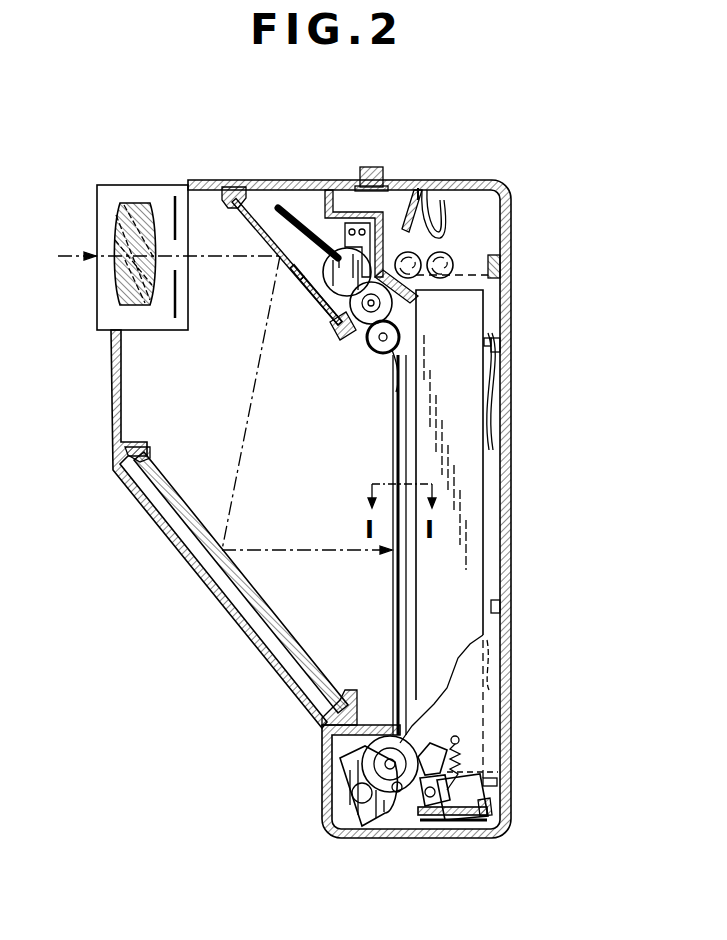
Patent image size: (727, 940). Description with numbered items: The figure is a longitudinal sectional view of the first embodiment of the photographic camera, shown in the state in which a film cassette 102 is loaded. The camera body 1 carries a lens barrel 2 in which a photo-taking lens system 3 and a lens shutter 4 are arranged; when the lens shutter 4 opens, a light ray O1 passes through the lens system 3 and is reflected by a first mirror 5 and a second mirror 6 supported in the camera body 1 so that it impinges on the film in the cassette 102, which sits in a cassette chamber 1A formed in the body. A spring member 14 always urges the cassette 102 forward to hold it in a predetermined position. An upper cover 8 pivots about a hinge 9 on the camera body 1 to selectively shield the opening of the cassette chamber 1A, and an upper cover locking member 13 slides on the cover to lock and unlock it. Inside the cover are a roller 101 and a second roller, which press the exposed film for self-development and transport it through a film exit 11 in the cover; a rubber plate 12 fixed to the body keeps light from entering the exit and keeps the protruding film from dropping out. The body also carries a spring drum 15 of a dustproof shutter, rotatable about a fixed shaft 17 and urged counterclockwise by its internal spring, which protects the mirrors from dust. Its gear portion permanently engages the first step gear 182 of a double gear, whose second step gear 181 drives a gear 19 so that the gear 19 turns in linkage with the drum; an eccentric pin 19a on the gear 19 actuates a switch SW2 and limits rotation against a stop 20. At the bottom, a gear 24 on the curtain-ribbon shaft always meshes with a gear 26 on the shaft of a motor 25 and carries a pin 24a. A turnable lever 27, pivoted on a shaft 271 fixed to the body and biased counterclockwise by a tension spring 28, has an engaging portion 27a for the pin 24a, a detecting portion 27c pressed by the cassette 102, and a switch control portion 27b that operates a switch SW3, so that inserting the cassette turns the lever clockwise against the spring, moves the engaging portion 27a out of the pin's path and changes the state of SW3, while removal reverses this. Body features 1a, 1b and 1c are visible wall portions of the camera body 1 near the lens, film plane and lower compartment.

The camera body 1 is at (122, 386).
The cassette chamber 1A is at (498, 550).
The bracket on housing 1a is at (500, 789).
The film plane / pressure plate 1b is at (394, 606).
The housing corner wall 1c is at (336, 742).
The lens barrel 2 is at (108, 190).
The photo-taking lens system 3 is at (132, 203).
The lens shutter 4 is at (172, 196).
The first mirror 5 is at (248, 203).
The second mirror 6 is at (195, 548).
The upper cover 8 is at (486, 179).
The hinge 9 is at (500, 268).
The roller 101 is at (411, 259).
The film cassette 102 is at (446, 259).
The film exit 11 is at (420, 172).
The rubber plate 12 is at (432, 229).
The upper cover locking member 13 is at (370, 167).
The spring member 14 is at (493, 412).
The spring drum 15 is at (385, 353).
The fixed shaft 17 is at (392, 338).
The second step gear 181 is at (370, 311).
The first step gear 182 is at (390, 302).
The gear 19 is at (320, 297).
The eccentric pin 19a is at (338, 328).
The stop 20 is at (324, 270).
The gear 24 is at (374, 766).
The pin 24a is at (397, 793).
The motor 25 is at (367, 815).
The gear 26 is at (356, 803).
The turnable lever 27 is at (450, 822).
The shaft 271 is at (431, 798).
The engaging portion 27a is at (446, 744).
The switch control portion 27b is at (488, 813).
The detecting portion 27c is at (484, 782).
The tension spring 28 is at (462, 762).
The light ray O1 is at (214, 399).
The switch SW2 is at (300, 212).
The switch SW3 is at (474, 822).